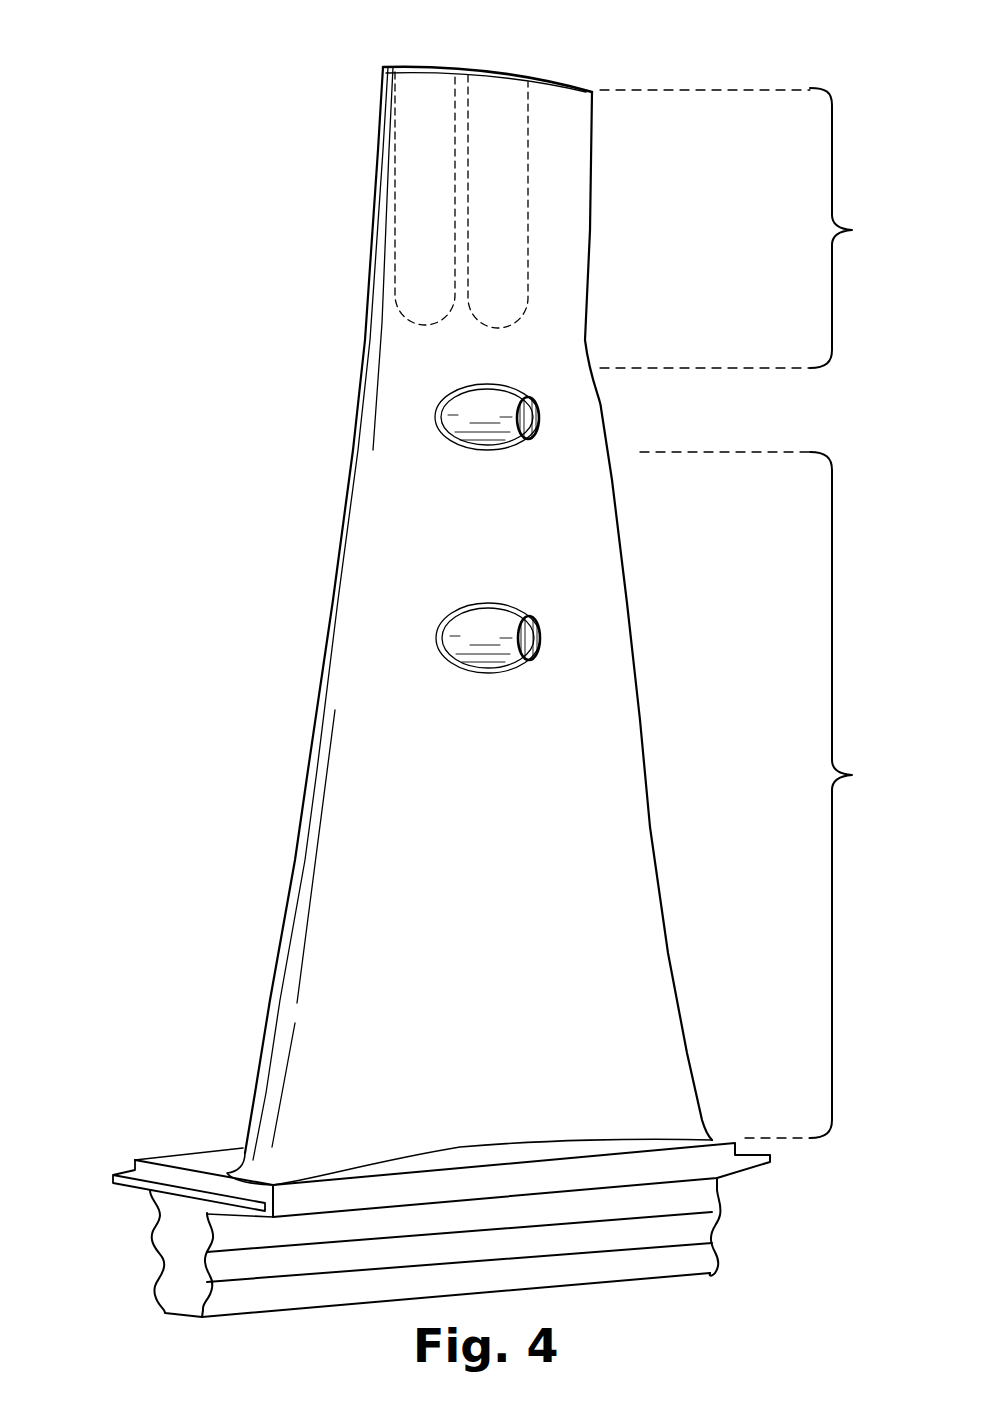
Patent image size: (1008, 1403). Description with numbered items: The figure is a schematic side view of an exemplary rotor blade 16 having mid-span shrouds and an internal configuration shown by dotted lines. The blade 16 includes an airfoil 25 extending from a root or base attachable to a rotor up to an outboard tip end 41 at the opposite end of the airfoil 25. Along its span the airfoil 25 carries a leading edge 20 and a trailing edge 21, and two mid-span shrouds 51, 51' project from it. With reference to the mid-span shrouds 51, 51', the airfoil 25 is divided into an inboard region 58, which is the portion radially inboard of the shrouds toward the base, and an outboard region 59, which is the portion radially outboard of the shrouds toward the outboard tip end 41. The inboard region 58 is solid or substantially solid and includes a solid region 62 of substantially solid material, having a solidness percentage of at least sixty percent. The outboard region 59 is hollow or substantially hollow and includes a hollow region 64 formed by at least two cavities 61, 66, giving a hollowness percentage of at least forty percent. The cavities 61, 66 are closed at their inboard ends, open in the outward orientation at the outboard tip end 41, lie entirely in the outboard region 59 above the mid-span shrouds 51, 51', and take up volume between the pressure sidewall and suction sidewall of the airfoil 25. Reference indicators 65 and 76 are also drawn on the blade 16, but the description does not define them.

The rotor blade 16 is at (222, 209).
The leading edge 20 is at (360, 366).
The trailing edge 21 is at (602, 410).
The airfoil 25 is at (295, 672).
The outboard tip end 41 is at (505, 72).
The mid-span shroud 51 is at (414, 462).
The mid-span shroud 51' is at (411, 638).
The inboard region 58 is at (765, 795).
The outboard region 59 is at (745, 228).
The cavity 61 is at (423, 193).
The solid region 62 is at (572, 860).
The hollow region 64 is at (540, 177).
The passage wall 65 is at (393, 238).
The cavity 66 is at (498, 148).
The build direction 76 is at (470, 64).